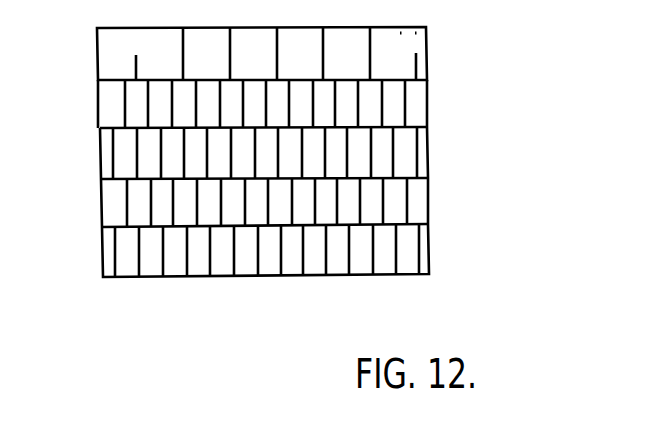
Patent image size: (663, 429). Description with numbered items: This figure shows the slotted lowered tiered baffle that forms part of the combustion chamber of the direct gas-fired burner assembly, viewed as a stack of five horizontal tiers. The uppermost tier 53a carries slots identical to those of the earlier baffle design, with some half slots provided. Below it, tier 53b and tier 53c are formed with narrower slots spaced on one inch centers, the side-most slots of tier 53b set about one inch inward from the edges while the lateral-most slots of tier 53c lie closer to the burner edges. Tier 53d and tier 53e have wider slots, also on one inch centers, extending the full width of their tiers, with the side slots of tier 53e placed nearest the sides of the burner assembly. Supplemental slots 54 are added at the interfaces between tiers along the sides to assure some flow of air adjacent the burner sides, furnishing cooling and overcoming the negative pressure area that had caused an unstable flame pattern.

The tier a of lower tiered baffle 53a is at (428, 59).
The tier b of lower tiered baffle 53b is at (430, 101).
The tier c of lower tiered baffle 53c is at (430, 152).
The tier d of lower tiered baffle 53d is at (430, 203).
The tier e of lower tiered baffle 53e is at (430, 258).
The supplemental slots 54 is at (428, 120).